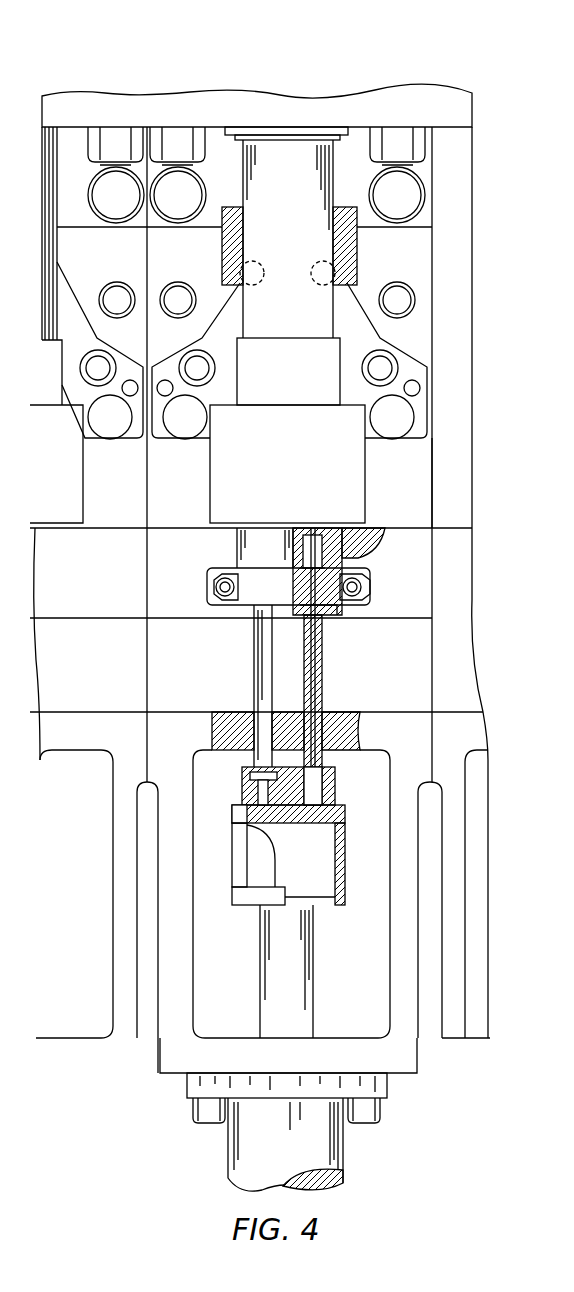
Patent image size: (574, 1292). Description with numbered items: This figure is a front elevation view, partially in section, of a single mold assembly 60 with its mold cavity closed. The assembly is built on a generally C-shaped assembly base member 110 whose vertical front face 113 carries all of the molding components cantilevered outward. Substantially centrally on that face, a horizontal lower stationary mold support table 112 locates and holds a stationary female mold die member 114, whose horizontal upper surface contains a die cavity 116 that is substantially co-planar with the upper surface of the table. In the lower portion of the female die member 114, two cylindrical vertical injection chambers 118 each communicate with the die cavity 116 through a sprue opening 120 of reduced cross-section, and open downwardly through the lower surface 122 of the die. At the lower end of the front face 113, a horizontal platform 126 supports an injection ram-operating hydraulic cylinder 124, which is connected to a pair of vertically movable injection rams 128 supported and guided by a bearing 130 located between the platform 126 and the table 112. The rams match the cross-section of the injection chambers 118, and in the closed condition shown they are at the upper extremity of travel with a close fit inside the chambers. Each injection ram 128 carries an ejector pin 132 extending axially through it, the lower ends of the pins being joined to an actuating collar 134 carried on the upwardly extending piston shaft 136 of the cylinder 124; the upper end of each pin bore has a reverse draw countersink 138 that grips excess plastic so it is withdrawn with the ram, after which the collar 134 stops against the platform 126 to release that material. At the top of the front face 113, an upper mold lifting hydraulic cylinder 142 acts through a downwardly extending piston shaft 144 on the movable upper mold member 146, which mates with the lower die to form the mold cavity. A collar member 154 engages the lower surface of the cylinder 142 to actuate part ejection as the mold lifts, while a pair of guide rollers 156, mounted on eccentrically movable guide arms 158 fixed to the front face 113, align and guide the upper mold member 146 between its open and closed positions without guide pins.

The mold assembly 60 is at (266, 72).
The assembly base member 110 is at (432, 277).
The lower stationary mold support table 112 is at (190, 563).
The vertical front face 113 is at (423, 469).
The female mold die member 114 is at (336, 548).
The die cavity 116 is at (300, 535).
The injection chambers 118 is at (338, 612).
The sprue opening 120 is at (311, 538).
The lower surface 122 is at (212, 617).
The injection ram-operating hydraulic cylinder 124 is at (286, 1164).
The platform 126 is at (268, 1064).
The injection rams 128 is at (262, 663).
The bearing 130 is at (192, 752).
The ejector pin 132 is at (313, 688).
The actuating collar 134 is at (340, 832).
The piston shaft 136 is at (305, 972).
The reverse draw countersink 138 is at (325, 570).
The upper mold lifting hydraulic cylinder 142 is at (346, 121).
The piston shaft 144 is at (302, 330).
The upper mold member 146 is at (290, 442).
The collar member 154 is at (222, 250).
The guide rollers 156 is at (170, 441).
The eccentrically movable guide arms 158 is at (338, 352).